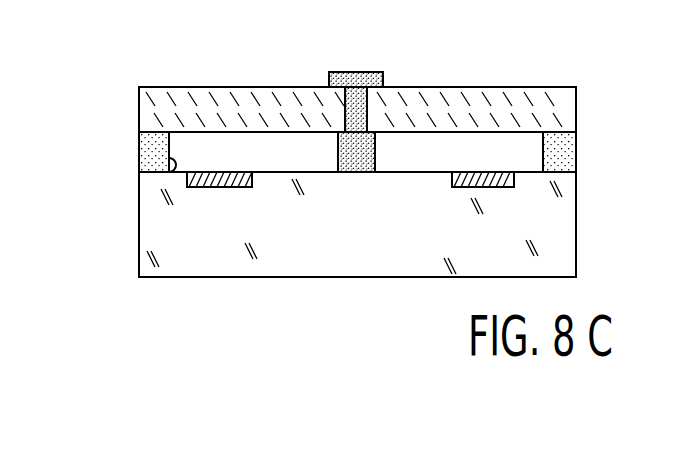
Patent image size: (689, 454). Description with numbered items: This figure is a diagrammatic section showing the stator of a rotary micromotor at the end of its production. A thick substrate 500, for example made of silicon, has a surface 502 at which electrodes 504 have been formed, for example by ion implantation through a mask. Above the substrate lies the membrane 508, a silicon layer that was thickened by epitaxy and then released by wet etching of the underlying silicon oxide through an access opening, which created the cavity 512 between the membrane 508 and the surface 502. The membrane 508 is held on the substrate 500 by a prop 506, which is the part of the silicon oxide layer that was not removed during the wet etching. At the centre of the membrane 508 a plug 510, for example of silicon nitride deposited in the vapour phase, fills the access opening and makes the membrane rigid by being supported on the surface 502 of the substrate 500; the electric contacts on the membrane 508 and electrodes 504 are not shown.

The substrate 500 is at (187, 257).
The surface 502 is at (170, 163).
The electrodes 504 is at (205, 188).
The prop 506 is at (163, 143).
The membrane 508 is at (172, 97).
The plug 510 is at (358, 78).
The cavity 512 is at (307, 158).